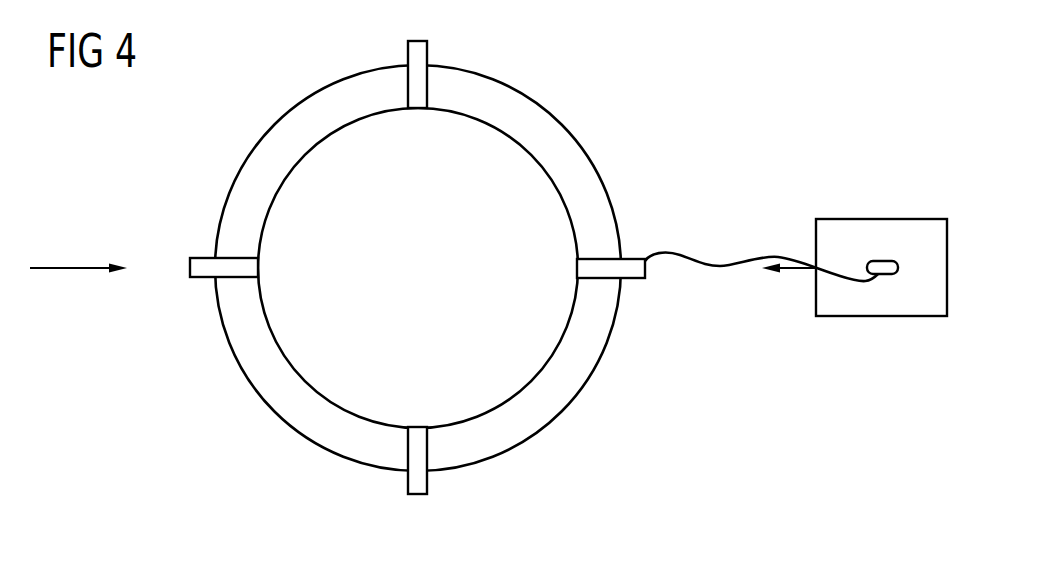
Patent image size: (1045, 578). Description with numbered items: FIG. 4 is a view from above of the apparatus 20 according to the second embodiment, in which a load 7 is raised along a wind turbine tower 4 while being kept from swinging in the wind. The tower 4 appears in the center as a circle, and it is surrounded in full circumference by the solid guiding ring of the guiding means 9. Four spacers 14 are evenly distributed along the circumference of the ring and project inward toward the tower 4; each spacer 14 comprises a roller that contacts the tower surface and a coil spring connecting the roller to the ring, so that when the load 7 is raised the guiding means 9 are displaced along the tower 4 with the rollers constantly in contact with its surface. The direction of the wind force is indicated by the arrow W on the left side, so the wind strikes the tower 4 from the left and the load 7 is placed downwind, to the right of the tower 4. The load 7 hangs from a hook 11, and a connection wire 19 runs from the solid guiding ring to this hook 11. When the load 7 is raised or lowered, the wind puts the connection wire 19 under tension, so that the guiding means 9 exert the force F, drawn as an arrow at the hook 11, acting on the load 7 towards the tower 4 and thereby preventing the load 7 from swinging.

The tower 4 is at (548, 360).
The load 7 is at (893, 316).
The guiding means 9 is at (685, 176).
The hook 11 is at (882, 261).
The spacer 14 is at (427, 52).
The connection wire 19 is at (720, 266).
The apparatus 20 is at (240, 465).
The force F is at (797, 265).
The arrow indicating wind force direction W is at (75, 268).